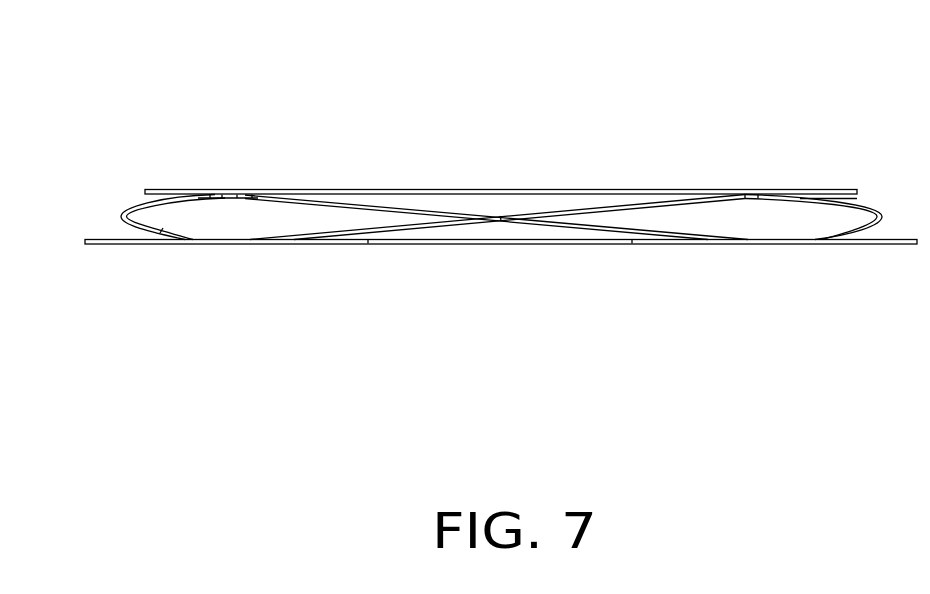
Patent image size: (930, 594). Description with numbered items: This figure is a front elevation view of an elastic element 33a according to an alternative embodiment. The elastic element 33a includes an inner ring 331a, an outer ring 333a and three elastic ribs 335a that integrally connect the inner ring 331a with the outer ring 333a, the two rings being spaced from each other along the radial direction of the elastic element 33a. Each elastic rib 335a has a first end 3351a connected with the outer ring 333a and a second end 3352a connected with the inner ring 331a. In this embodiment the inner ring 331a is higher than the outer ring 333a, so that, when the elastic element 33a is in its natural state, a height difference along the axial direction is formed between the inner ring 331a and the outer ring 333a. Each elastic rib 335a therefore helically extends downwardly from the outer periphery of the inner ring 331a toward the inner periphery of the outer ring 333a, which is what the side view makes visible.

The elastic element 33a is at (508, 63).
The inner ring 331a is at (162, 190).
The outer ring 333a is at (113, 247).
The elastic rib 335a is at (460, 202).
The first end 3351a is at (184, 242).
The second end 3352a is at (202, 194).